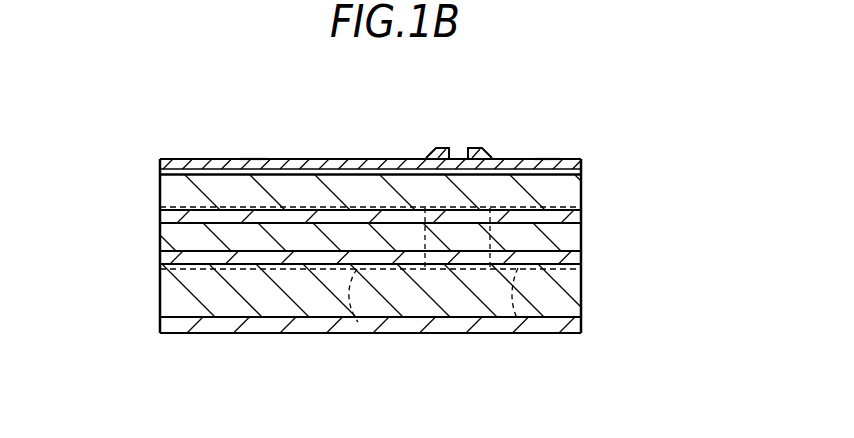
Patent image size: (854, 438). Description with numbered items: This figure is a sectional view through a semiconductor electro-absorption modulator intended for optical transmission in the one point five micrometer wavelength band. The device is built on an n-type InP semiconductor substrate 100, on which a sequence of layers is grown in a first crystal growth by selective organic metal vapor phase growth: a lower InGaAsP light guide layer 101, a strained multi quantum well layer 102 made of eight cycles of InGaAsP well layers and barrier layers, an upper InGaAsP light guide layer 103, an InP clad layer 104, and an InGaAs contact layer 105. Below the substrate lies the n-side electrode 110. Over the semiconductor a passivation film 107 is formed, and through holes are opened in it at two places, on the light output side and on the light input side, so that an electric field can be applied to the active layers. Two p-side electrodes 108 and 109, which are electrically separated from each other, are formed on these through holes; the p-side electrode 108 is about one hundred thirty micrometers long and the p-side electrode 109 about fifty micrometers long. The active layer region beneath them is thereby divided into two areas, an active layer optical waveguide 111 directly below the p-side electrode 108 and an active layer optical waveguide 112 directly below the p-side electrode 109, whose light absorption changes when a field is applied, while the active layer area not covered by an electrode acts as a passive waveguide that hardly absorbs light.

The n-type InP semiconductor substrate 100 is at (582, 292).
The lower InGaAsP light guide layer 101 is at (582, 262).
The strained multi quantum well layer 102 is at (163, 240).
The upper InGaAsP light guide layer 103 is at (582, 220).
The InP clad layer 104 is at (582, 195).
The InGaAs contact layer 105 is at (582, 175).
The passivation film 107 is at (460, 157).
The p-side electrode 108 is at (253, 157).
The p-side electrode 109 is at (547, 157).
The n-side electrode 110 is at (250, 333).
The active layer optical waveguide 111 is at (358, 322).
The active layer optical waveguide 112 is at (518, 320).